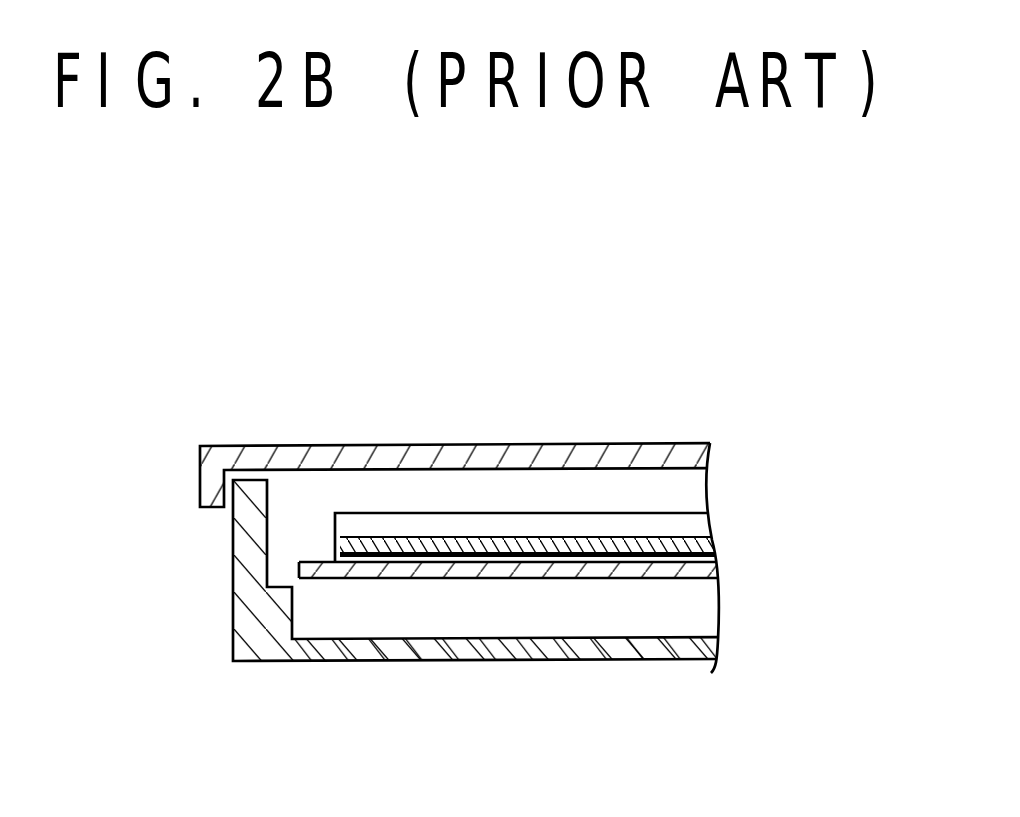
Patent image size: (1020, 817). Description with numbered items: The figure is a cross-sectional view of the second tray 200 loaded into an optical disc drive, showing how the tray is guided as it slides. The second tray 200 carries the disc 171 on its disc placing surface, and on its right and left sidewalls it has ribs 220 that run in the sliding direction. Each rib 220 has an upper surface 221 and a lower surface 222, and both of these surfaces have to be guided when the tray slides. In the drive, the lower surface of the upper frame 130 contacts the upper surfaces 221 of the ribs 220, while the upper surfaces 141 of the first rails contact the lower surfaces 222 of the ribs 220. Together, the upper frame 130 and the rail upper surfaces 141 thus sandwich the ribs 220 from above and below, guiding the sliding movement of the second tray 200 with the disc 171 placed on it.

The upper frame 130 is at (218, 446).
The upper surface of first rail 141 is at (279, 588).
The disc 171 is at (587, 540).
The second tray 200 is at (401, 537).
The rib 220 is at (498, 557).
The upper surface of rib 221 is at (316, 561).
The lower surface of rib 222 is at (319, 580).